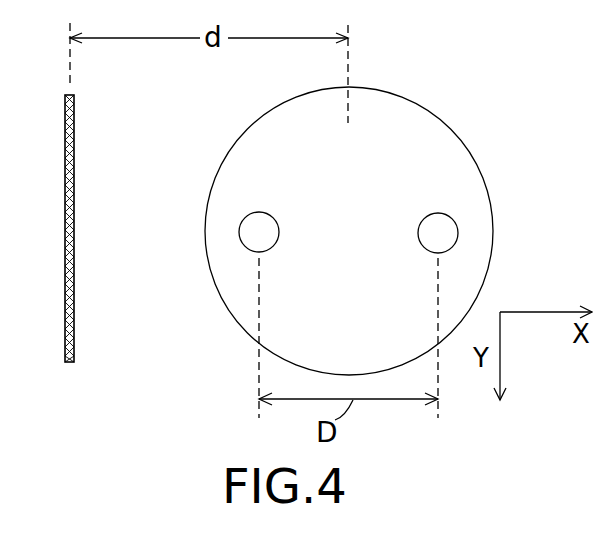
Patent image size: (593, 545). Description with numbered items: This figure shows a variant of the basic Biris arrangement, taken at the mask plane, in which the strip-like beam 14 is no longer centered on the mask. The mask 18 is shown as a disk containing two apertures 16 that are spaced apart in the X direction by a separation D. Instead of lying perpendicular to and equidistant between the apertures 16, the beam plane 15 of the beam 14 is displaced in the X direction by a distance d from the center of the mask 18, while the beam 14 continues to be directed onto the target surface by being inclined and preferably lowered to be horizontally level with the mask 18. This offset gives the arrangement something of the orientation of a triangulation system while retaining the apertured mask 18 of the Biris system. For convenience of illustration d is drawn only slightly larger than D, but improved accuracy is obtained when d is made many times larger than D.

The strip-like beam 14 is at (77, 178).
The beam plane 15 is at (72, 66).
The apertures 16 is at (433, 237).
The mask 18 is at (400, 130).